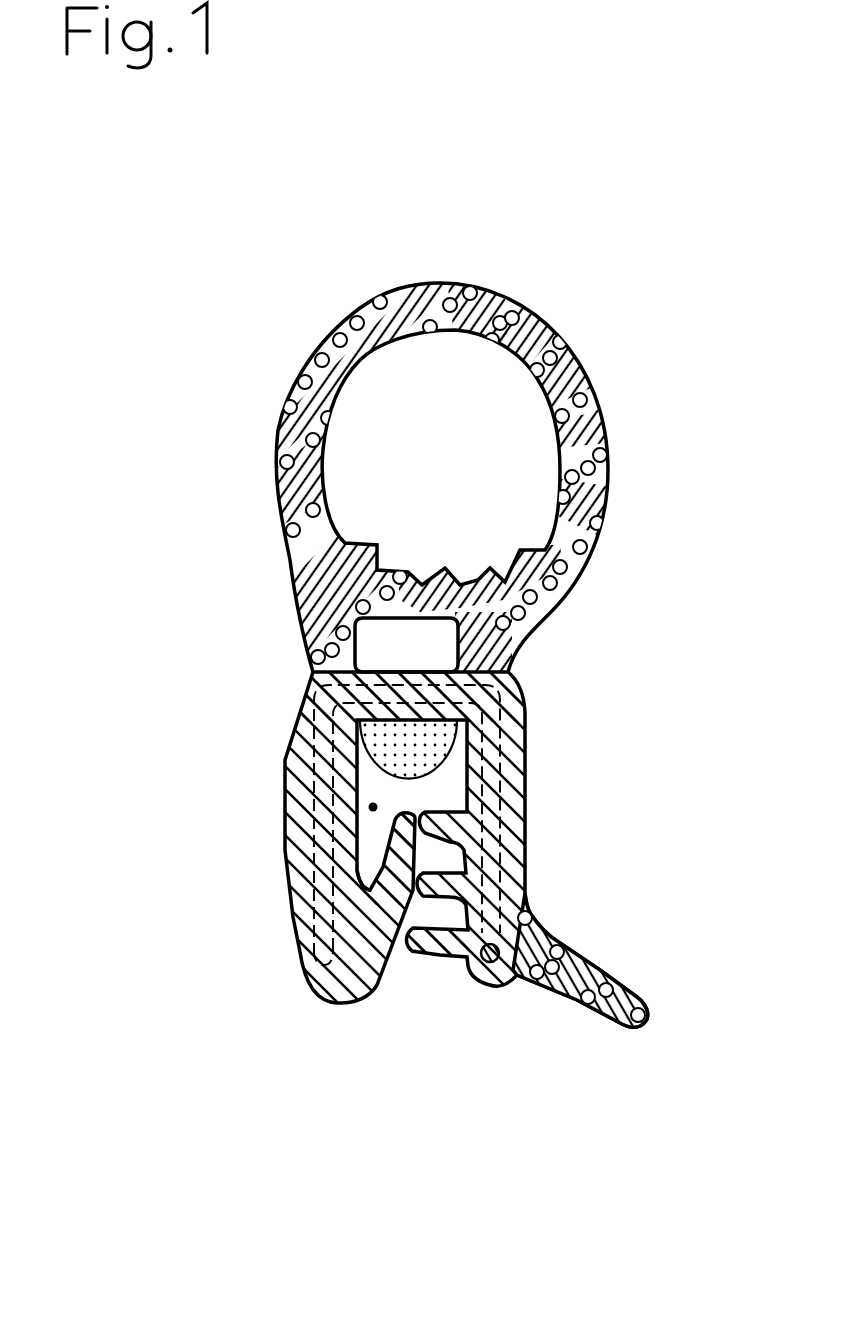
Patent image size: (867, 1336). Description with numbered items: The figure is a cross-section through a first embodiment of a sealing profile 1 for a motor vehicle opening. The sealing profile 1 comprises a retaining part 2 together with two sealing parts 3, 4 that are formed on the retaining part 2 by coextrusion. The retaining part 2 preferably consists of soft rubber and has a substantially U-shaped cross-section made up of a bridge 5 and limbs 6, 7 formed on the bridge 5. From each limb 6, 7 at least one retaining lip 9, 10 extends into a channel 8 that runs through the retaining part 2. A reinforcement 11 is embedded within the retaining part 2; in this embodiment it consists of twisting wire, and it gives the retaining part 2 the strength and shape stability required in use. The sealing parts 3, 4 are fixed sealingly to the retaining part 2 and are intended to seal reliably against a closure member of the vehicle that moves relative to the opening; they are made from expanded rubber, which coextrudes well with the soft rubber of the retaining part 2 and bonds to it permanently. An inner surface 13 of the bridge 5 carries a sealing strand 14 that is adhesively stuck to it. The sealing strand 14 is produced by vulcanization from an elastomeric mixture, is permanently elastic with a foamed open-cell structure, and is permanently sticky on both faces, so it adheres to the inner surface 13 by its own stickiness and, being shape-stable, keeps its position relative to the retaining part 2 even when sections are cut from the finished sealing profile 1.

The sealing profile 1 is at (239, 1131).
The retaining part 2 is at (288, 965).
The sealing part 3 is at (622, 441).
The sealing part 4 is at (614, 971).
The bridge 5 is at (415, 672).
The limb 6 is at (357, 850).
The limb 7 is at (523, 840).
The channel 8 is at (370, 808).
The retaining lip 9 is at (360, 860).
The retaining lip 10 is at (440, 950).
The reinforcement 11 is at (525, 786).
The inner surface 13 is at (410, 786).
The sealing strand 14 is at (372, 807).